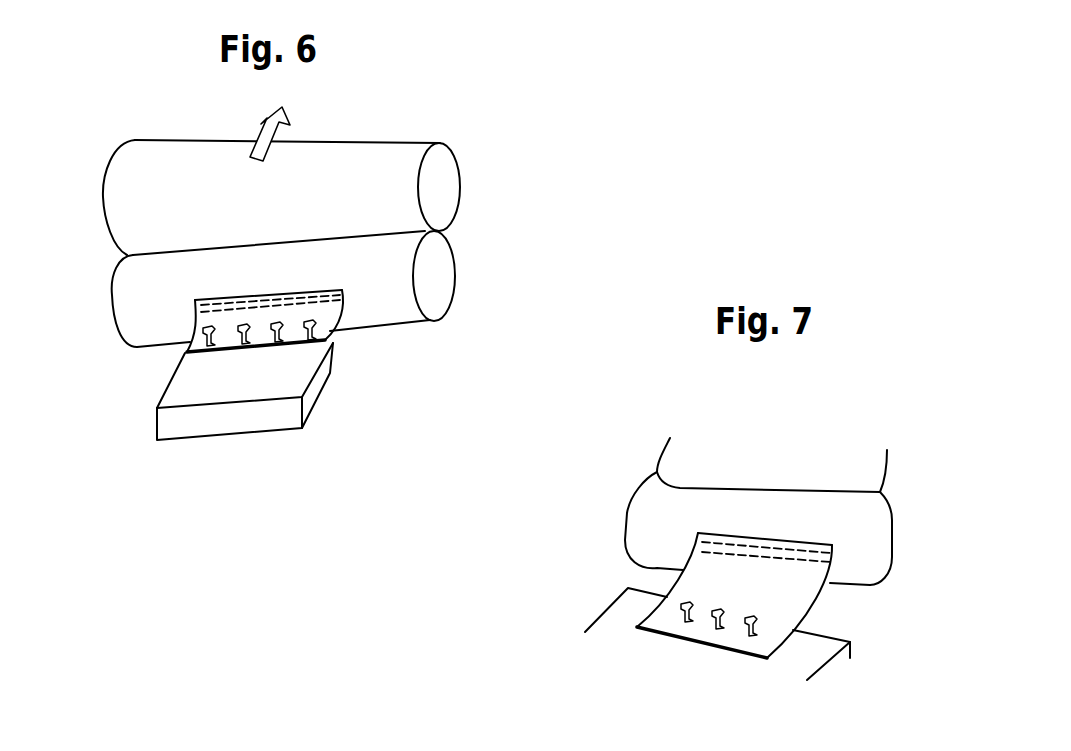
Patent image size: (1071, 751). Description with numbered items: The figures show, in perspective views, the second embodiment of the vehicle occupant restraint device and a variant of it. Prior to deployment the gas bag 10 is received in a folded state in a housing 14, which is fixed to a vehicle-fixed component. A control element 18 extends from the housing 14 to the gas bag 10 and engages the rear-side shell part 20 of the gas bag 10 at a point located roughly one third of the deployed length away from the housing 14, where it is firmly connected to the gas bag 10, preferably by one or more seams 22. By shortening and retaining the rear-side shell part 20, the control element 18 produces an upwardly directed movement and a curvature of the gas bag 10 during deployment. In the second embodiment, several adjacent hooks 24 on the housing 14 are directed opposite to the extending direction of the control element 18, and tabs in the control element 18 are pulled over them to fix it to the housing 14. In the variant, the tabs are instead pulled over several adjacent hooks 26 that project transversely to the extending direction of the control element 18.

In FIG. 6, the gas bag 10 is at (342, 163).
In FIG. 7, the gas bag 10 is at (750, 468).
In FIG. 6, the housing 14 is at (251, 383).
In FIG. 7, the housing 14 is at (610, 622).
In FIG. 6, the control element 18 is at (258, 317).
In FIG. 7, the control element 18 is at (771, 623).
In FIG. 6, the rear-side shell part 20 is at (153, 275).
In FIG. 6, the seam 22 is at (317, 290).
In FIG. 6, the hooks 24 is at (200, 333).
In FIG. 7, the hooks 26 is at (760, 617).